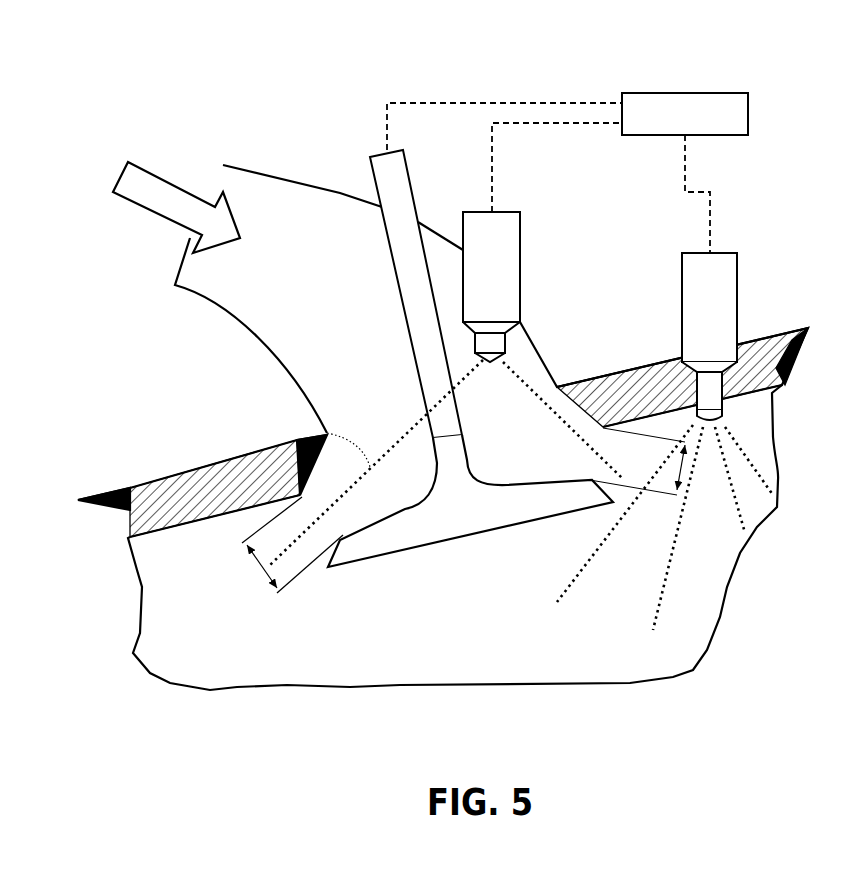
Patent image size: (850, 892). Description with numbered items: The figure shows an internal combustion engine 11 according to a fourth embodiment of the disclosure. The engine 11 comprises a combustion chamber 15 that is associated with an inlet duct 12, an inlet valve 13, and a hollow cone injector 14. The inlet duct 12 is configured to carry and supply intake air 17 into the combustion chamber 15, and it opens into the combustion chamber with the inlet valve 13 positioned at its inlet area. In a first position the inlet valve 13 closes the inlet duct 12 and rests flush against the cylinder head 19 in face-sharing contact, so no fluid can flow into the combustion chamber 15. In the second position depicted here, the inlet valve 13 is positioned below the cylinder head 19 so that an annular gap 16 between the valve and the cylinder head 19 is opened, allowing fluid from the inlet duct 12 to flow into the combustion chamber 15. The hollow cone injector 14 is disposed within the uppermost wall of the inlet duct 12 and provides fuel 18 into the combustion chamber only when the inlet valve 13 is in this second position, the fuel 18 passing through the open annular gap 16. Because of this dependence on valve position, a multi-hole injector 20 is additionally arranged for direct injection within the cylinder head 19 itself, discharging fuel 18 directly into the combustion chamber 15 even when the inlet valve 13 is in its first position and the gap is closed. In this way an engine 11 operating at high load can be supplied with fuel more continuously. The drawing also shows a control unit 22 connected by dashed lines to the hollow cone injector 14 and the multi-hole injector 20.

The internal combustion engine 11 is at (150, 92).
The inlet duct 12 is at (223, 307).
The inlet valve 13 is at (505, 530).
The hollow cone injector 14 is at (522, 223).
The combustion chamber 15 is at (442, 651).
The annular gap 16 is at (261, 567).
The intake air 17 is at (157, 217).
The fuel 18 is at (305, 332).
The cylinder head 19 is at (787, 333).
The multi-hole injector 20 is at (732, 252).
The control unit 22 is at (699, 127).